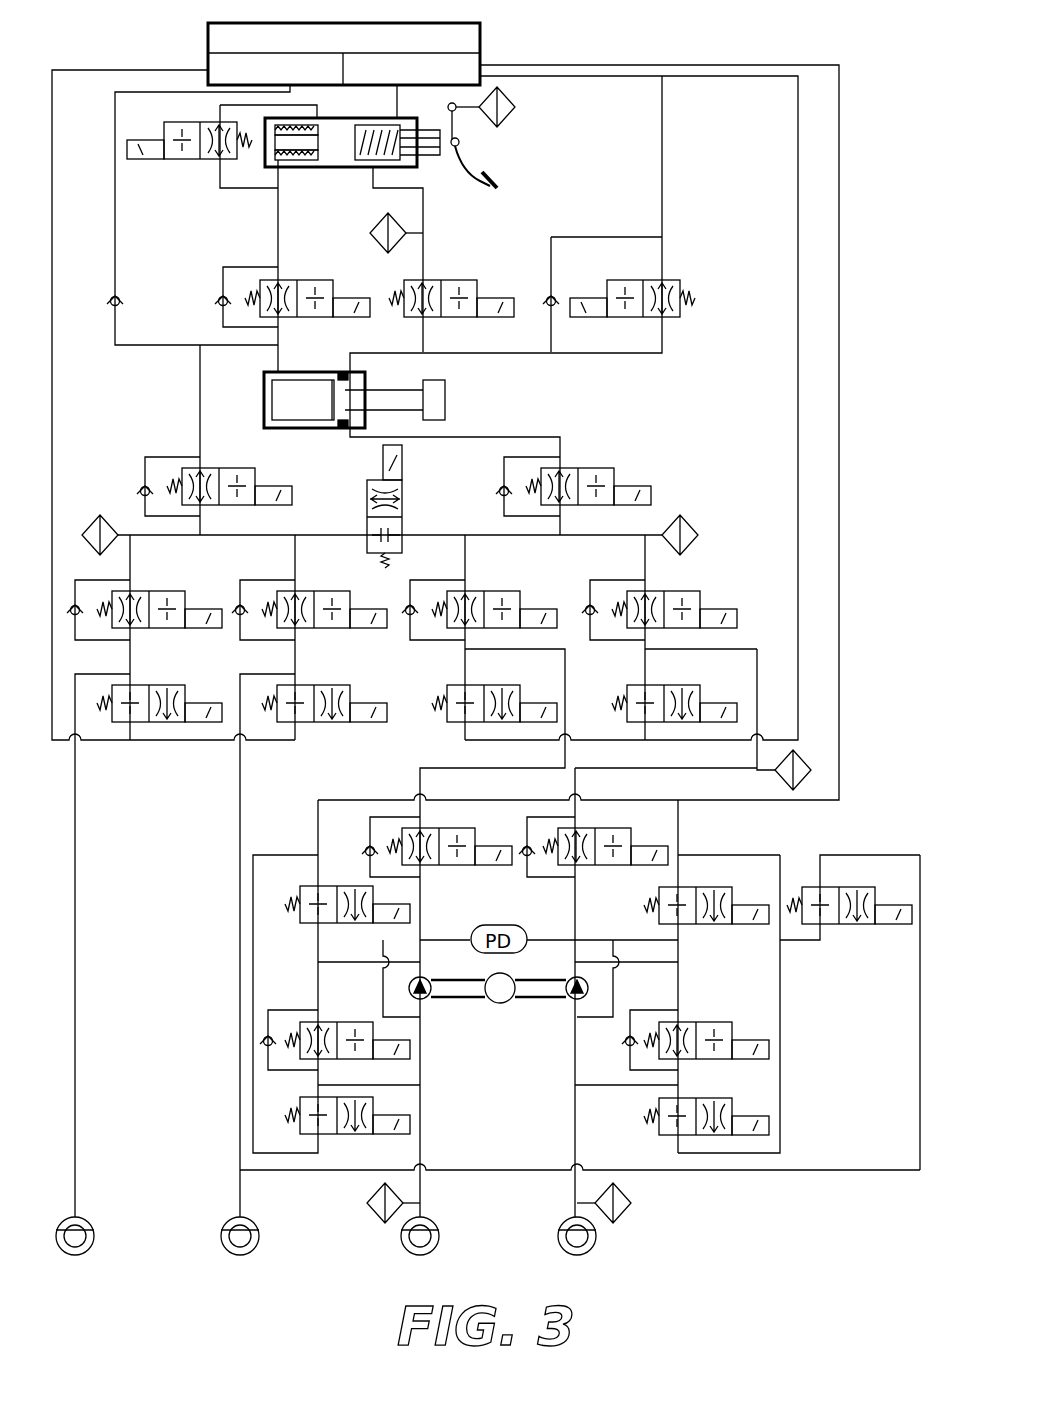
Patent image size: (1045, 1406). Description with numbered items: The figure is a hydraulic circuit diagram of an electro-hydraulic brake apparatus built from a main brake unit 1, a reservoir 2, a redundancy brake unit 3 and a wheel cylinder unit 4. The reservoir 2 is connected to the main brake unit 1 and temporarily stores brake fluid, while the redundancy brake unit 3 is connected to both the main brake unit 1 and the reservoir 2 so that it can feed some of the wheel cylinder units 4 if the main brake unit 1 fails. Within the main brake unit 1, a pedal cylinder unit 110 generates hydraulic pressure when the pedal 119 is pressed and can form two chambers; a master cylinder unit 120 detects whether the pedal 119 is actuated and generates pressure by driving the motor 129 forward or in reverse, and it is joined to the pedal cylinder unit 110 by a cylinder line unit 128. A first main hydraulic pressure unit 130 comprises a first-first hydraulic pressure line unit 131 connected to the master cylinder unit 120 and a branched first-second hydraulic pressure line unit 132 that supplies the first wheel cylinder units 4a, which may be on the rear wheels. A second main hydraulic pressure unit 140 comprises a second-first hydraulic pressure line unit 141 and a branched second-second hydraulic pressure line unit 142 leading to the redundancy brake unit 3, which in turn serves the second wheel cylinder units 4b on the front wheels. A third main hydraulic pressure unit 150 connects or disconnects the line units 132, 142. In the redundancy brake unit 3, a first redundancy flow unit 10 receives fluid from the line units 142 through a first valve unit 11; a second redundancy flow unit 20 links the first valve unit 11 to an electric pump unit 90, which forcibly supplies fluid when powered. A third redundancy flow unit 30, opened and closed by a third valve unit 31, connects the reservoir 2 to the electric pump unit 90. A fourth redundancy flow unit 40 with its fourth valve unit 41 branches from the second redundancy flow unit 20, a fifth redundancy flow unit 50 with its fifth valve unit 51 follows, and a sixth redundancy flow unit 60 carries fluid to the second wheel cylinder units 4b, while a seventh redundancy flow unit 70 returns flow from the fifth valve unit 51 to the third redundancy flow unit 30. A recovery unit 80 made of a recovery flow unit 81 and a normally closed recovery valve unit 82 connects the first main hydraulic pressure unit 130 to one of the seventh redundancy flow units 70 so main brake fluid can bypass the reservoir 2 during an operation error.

The main brake unit 1 is at (113, 60).
The reservoir 2 is at (502, 40).
The redundancy brake unit 3 is at (865, 848).
The wheel cylinder unit 4 is at (343, 1247).
The first wheel cylinder unit 4a is at (221, 1238).
The second wheel cylinder unit 4b is at (499, 1224).
The first redundancy flow unit 10 is at (757, 762).
The first valve unit 11 is at (620, 867).
The second redundancy flow unit 20 is at (575, 905).
The third redundancy flow unit 30 is at (712, 976).
The third valve unit 31 is at (731, 924).
The fourth redundancy flow unit 40 is at (645, 962).
The fourth valve unit 41 is at (690, 1021).
The fifth redundancy flow unit 50 is at (672, 1144).
The fifth valve unit 51 is at (706, 1134).
The sixth redundancy flow unit 60 is at (575, 1105).
The seventh redundancy flow unit 70 is at (761, 1154).
The recovery unit 80 is at (850, 1012).
The recovery flow unit 81 is at (848, 960).
The recovery valve unit 82 is at (848, 924).
The electric pump unit 90 is at (500, 1004).
The pedal cylinder unit 110 is at (333, 180).
The pedal 119 is at (478, 158).
The master cylinder unit 120 is at (397, 440).
The cylinder line unit 128 is at (425, 258).
The motor 129 is at (447, 400).
The first main hydraulic pressure unit 130 is at (181, 450).
The first-first hydraulic pressure line unit 131 is at (196, 398).
The first-second hydraulic pressure line unit 132 is at (115, 567).
The second main hydraulic pressure unit 140 is at (650, 544).
The second-first hydraulic pressure line unit 141 is at (568, 448).
The second-second hydraulic pressure line unit 142 is at (667, 594).
The third main hydraulic pressure unit 150 is at (408, 492).